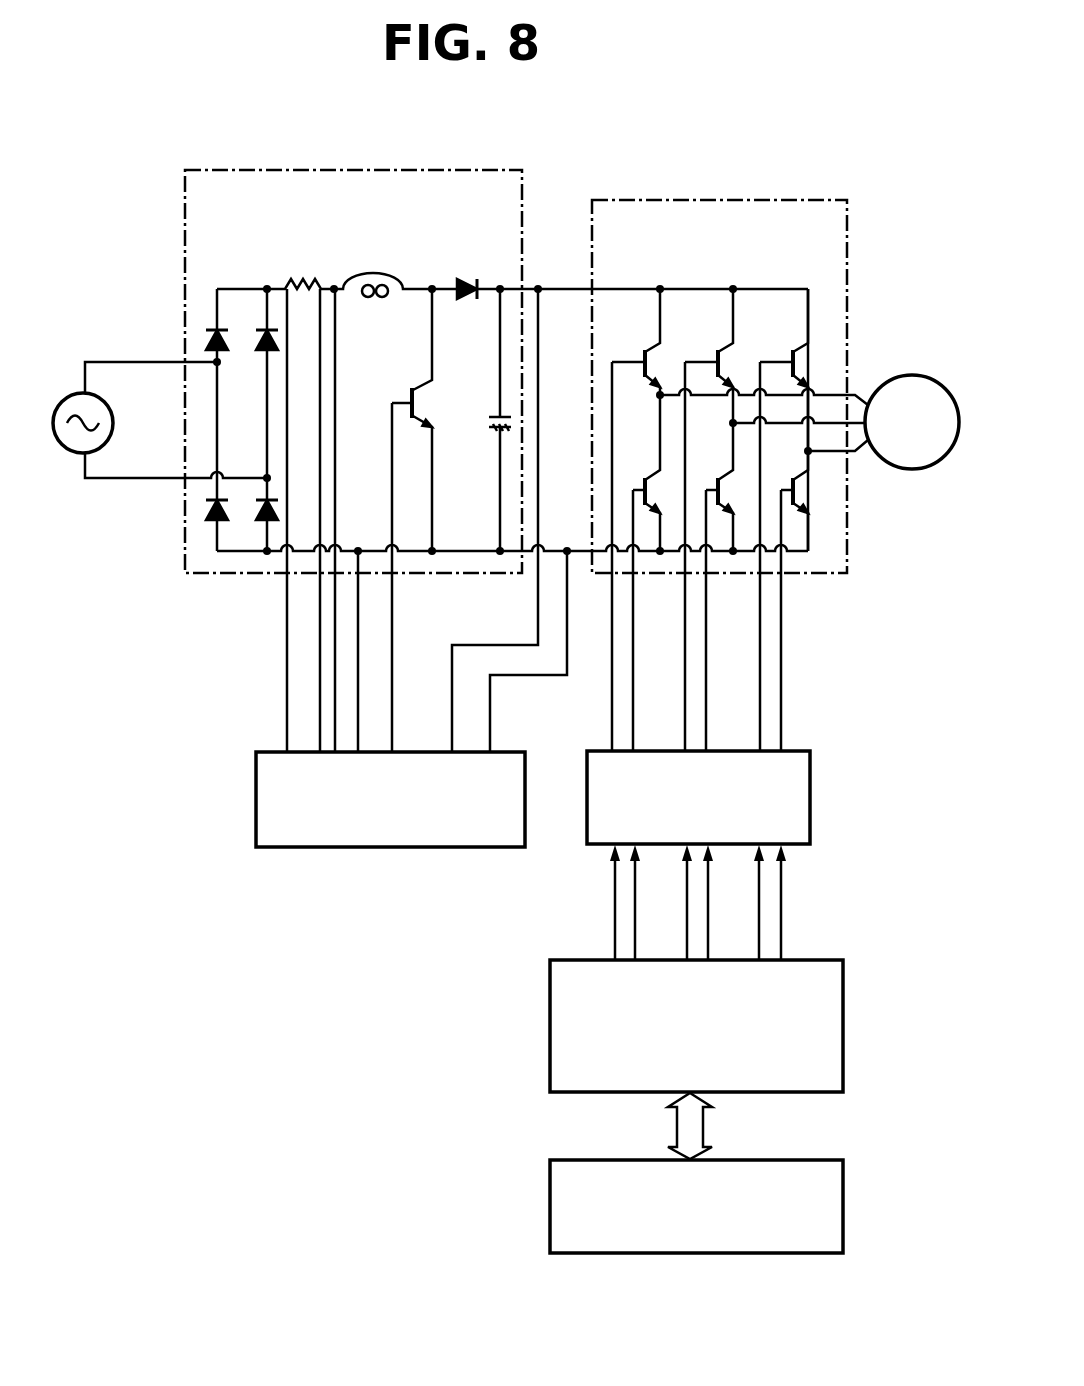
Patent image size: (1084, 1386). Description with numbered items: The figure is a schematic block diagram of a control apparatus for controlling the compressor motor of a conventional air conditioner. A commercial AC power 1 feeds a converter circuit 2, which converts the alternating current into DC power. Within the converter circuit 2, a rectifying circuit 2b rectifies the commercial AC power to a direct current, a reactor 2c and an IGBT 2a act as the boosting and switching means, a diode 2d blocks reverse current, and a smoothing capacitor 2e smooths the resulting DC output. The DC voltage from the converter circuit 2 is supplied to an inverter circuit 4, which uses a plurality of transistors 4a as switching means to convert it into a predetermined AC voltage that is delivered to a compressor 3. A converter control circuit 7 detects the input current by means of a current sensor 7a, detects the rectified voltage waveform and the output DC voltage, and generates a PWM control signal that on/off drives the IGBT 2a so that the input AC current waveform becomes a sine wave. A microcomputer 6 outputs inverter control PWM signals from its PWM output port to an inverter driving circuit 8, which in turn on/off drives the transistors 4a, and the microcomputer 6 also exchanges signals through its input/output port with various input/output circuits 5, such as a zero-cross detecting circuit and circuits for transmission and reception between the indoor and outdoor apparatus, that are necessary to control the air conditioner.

The commercial AC power 1 is at (112, 418).
The converter circuit 2 is at (307, 168).
The IGBT 2a is at (408, 390).
The rectifying circuit 2b is at (242, 420).
The reactor 2c is at (381, 300).
The diode 2d is at (463, 300).
The smoothing capacitor 2e is at (490, 428).
The compressor 3 is at (908, 375).
The inverter circuit 4 is at (743, 198).
The transistors 4a is at (710, 520).
The input/output circuits 5 is at (562, 1160).
The microcomputer 6 is at (820, 960).
The converter control circuit 7 is at (272, 752).
The current sensor 7a is at (302, 282).
The inverter driving circuit 8 is at (798, 751).